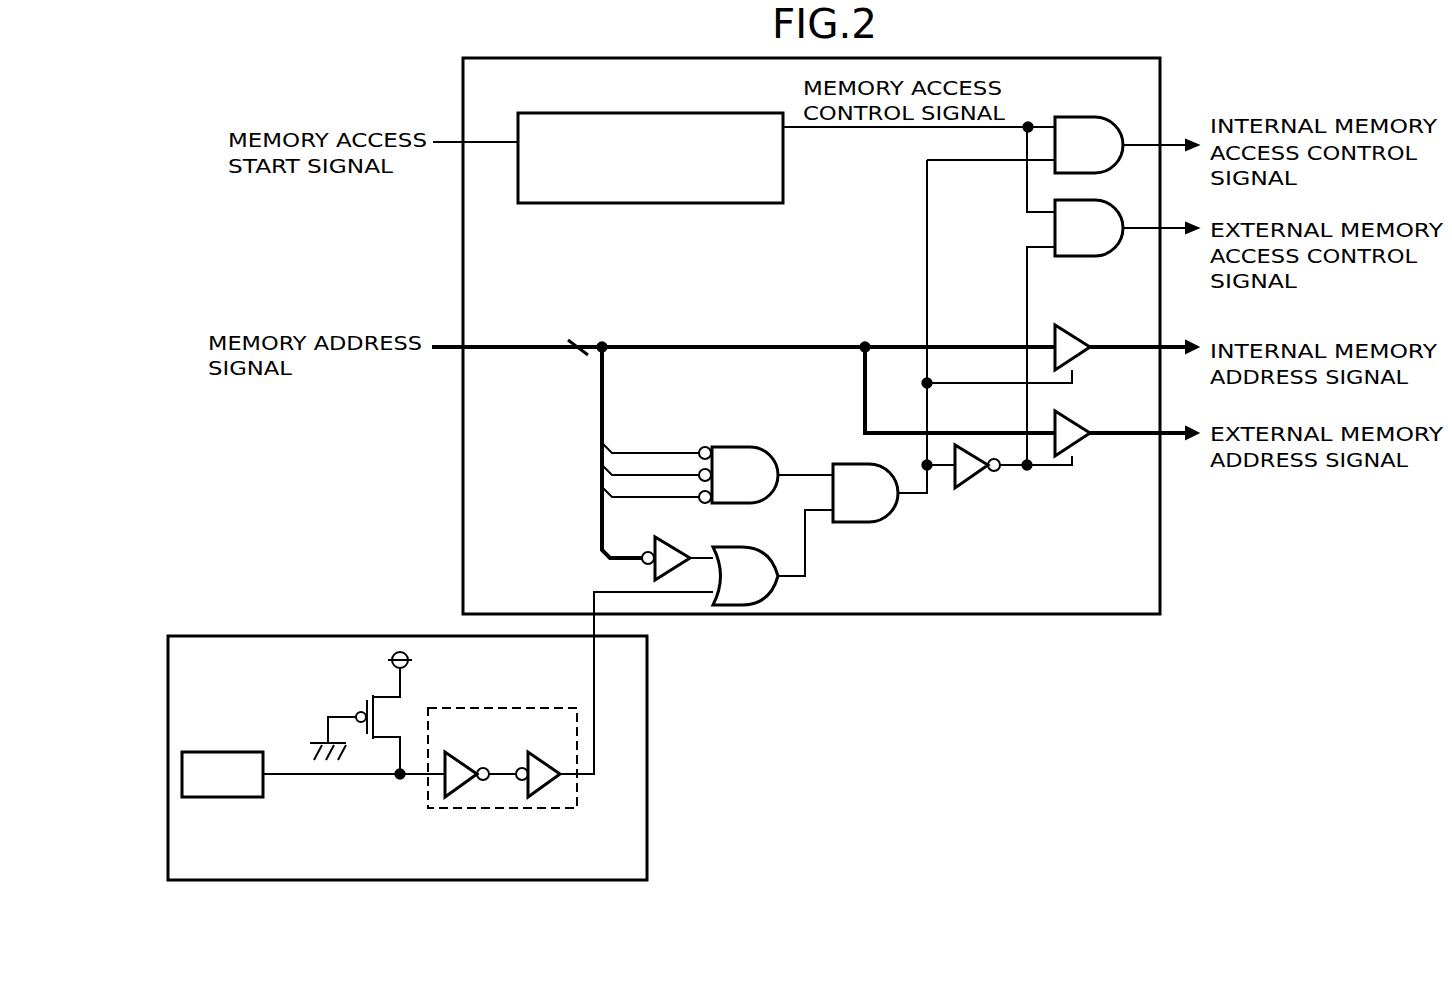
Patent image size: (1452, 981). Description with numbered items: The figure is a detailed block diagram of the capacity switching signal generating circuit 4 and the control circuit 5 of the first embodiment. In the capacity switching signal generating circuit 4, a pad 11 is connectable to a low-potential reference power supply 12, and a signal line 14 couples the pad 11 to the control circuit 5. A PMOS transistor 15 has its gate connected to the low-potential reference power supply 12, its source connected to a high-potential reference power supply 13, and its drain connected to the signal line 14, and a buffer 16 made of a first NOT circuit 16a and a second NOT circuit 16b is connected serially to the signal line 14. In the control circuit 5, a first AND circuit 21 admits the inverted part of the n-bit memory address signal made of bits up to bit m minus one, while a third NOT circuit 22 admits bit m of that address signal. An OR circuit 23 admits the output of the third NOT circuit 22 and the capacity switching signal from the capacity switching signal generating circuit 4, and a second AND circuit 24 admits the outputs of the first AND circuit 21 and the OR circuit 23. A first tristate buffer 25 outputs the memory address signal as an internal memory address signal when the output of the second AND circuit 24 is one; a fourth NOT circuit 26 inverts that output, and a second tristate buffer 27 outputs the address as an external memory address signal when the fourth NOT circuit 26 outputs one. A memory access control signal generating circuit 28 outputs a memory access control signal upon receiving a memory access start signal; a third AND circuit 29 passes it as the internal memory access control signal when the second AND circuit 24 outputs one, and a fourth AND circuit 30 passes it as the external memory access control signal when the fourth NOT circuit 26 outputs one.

The capacity switching signal generating circuit 4 is at (262, 636).
The control circuit 5 is at (463, 74).
The pad 11 is at (225, 752).
The low-potential reference power supply 12 is at (307, 742).
The high-potential reference power supply 13 is at (415, 660).
The signal line 14 is at (343, 776).
The PMOS transistor 15 is at (361, 697).
The buffer 16 is at (502, 707).
The first NOT circuit 16a is at (469, 755).
The second NOT circuit 16b is at (544, 755).
The first AND circuit 21 is at (749, 447).
The third NOT circuit 22 is at (662, 536).
The OR circuit 23 is at (746, 556).
The second AND circuit 24 is at (566, 358).
The first tristate buffer 25 is at (1068, 328).
The fourth NOT circuit 26 is at (978, 490).
The second tristate buffer 27 is at (1068, 412).
The memory access control signal generating circuit 28 is at (610, 205).
The third AND circuit 29 is at (1081, 118).
The fourth AND circuit 30 is at (1080, 258).